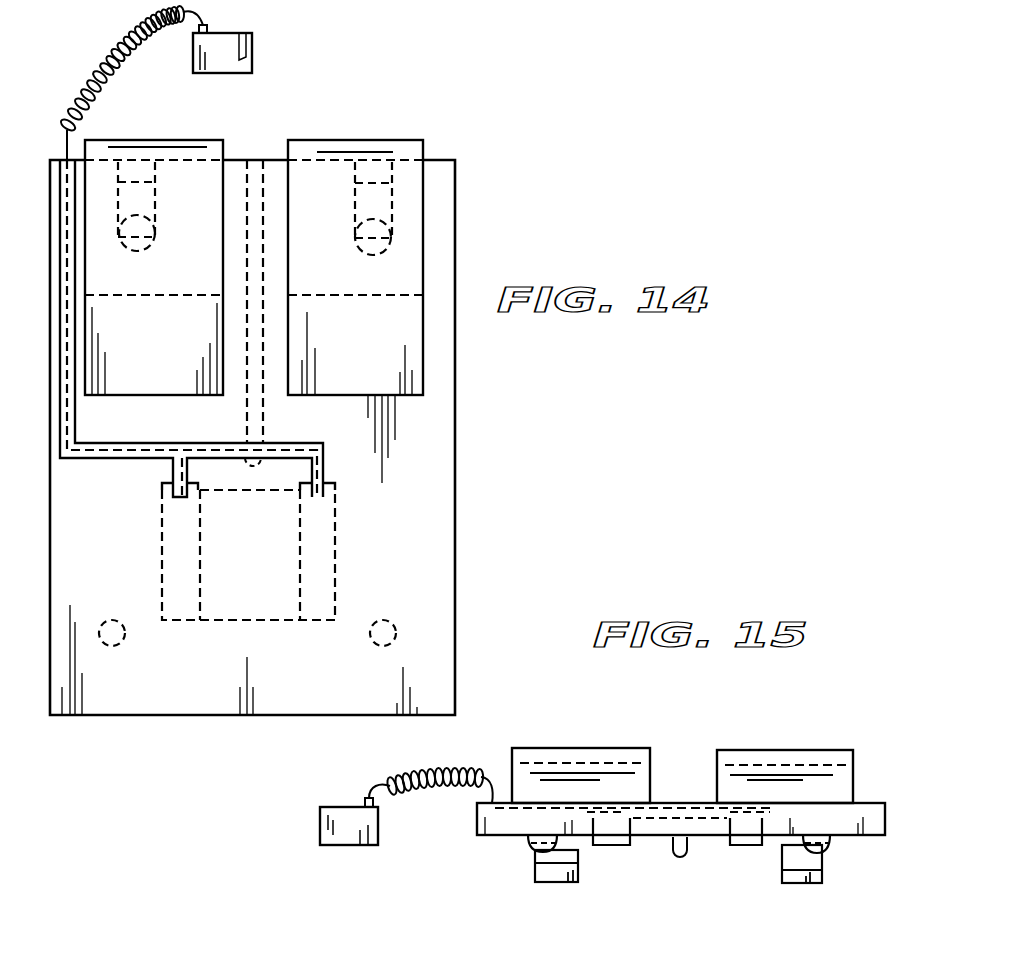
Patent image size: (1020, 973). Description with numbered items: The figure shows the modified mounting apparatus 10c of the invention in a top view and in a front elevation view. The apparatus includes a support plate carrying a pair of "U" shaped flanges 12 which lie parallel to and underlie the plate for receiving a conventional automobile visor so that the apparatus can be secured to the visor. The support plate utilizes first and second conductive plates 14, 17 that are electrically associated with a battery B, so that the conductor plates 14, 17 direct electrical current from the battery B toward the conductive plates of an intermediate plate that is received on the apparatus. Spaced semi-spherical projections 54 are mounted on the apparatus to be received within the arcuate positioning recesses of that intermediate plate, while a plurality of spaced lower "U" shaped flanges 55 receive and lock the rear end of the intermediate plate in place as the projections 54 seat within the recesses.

In FIG. 14, the "U" shaped flange 12 is at (170, 350).
In FIG. 15, the "U" shaped flange 12 is at (717, 778).
In FIG. 14, the first conductive plate 14 is at (256, 551).
In FIG. 14, the second conductive plate 17 is at (178, 517).
In FIG. 14, the semi-spherical projection 54 is at (118, 650).
In FIG. 15, the semi-spherical projection 54 is at (532, 847).
In FIG. 14, the lower "U" shaped flange 55 is at (202, 192).
In FIG. 15, the lower "U" shaped flange 55 is at (558, 878).
In FIG. 15, the modified apparatus 10c is at (871, 796).
In FIG. 14, the battery B is at (253, 52).
In FIG. 15, the battery B is at (347, 835).